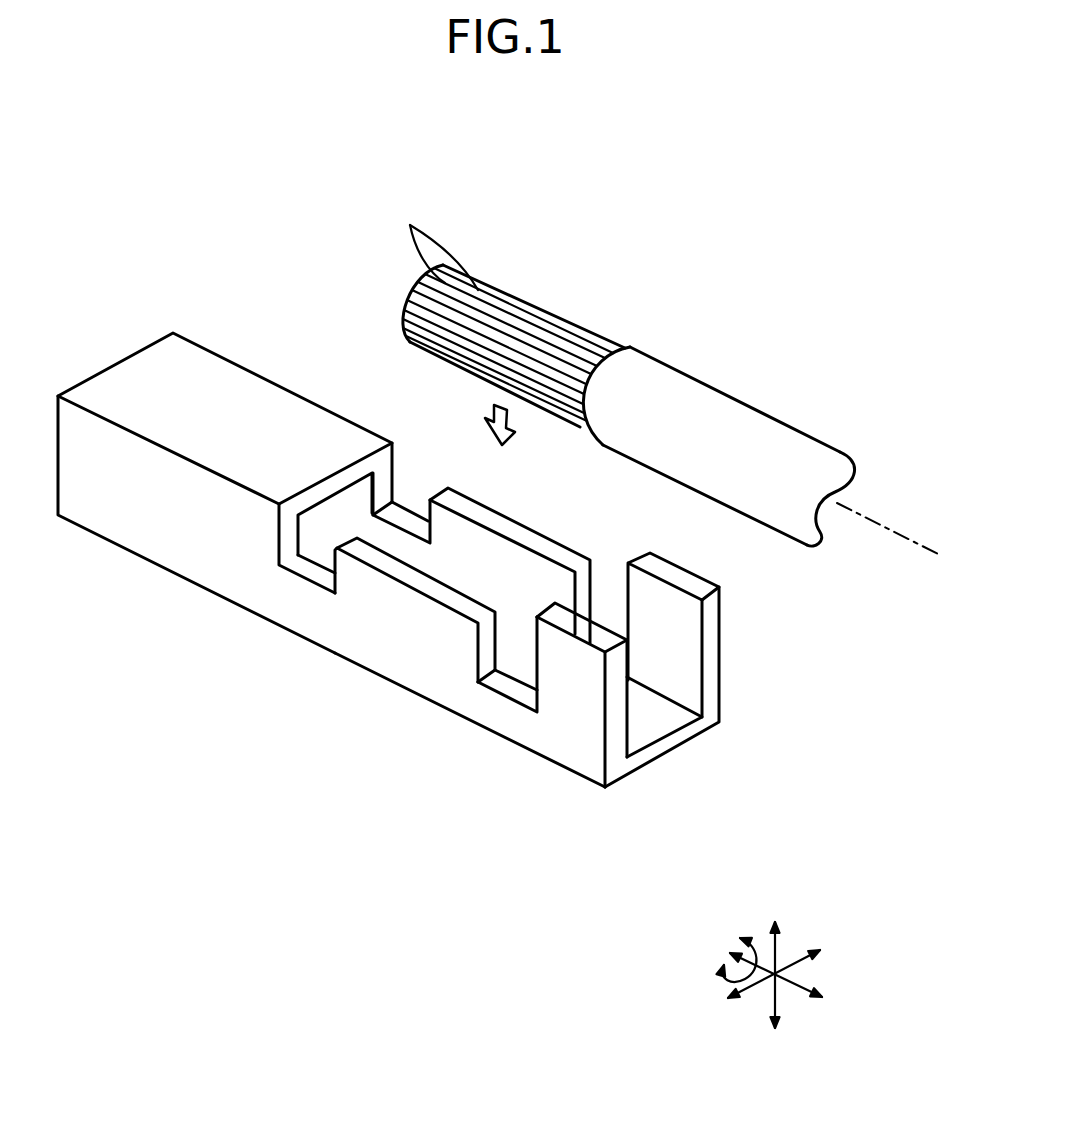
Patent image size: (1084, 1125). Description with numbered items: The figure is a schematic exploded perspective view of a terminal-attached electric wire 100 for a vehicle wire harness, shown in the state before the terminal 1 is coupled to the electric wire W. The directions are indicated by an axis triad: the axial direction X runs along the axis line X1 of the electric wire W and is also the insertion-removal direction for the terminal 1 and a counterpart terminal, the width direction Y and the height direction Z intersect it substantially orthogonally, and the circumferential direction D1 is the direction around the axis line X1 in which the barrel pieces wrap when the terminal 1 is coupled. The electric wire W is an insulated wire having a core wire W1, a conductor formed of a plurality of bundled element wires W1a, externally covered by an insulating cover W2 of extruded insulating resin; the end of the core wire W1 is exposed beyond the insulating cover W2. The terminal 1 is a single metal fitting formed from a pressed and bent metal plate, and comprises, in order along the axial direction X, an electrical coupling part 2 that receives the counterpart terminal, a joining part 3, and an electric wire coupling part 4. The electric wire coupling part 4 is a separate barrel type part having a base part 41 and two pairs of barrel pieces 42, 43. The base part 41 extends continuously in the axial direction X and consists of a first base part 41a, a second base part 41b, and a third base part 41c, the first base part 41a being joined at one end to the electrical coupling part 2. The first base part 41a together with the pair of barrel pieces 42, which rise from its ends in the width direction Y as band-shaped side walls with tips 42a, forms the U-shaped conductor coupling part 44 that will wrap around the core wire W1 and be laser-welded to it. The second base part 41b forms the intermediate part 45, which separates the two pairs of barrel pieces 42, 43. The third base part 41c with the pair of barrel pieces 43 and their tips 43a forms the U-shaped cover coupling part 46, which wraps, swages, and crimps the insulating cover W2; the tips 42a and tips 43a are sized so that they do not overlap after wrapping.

The terminal-attached electric wire 100 is at (553, 140).
The terminal 1 is at (328, 330).
The electrical coupling part 2 is at (155, 528).
The joining part 3 is at (302, 590).
The electric wire coupling part 4 is at (290, 731).
The base part 41 is at (642, 775).
The first base part 41a is at (507, 630).
The second base part 41b is at (520, 662).
The third base part 41c is at (653, 715).
The barrel pieces 42 is at (407, 543).
The tips 42a is at (458, 505).
The barrel pieces 43 is at (603, 638).
The tips 43a is at (688, 582).
The conductor coupling part 44 is at (395, 643).
The intermediate part 45 is at (500, 703).
The cover coupling part 46 is at (577, 740).
The electric wire W is at (463, 183).
The core wire W1 is at (495, 277).
The element wires W1a is at (432, 242).
The insulating cover W2 is at (673, 358).
The axis line X1 is at (898, 530).
The axial direction X is at (800, 983).
The width direction Y is at (797, 957).
The height direction Z is at (773, 945).
The circumferential direction D1 is at (723, 980).